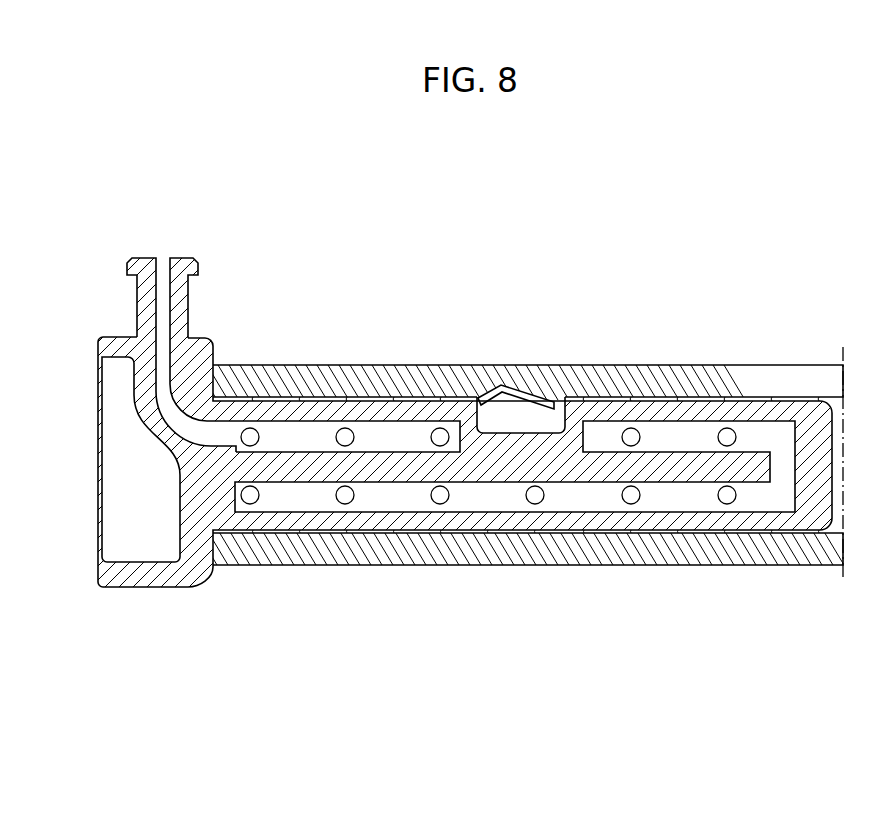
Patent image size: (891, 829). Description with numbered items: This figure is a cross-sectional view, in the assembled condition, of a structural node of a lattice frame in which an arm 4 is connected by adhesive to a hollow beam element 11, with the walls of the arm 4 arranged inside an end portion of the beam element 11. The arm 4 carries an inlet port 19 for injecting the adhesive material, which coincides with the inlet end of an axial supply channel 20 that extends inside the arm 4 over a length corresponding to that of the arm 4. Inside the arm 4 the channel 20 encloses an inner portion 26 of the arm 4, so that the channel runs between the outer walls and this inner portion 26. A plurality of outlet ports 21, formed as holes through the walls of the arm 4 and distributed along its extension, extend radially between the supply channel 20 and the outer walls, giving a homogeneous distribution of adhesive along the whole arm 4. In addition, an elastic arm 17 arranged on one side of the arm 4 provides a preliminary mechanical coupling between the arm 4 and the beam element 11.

The arm 4 is at (232, 330).
The inlet port 19 is at (132, 260).
The beam element 11 is at (687, 358).
The axial supply channel 20 is at (380, 435).
The inner portion 26 is at (380, 463).
The elastic arm 17 is at (517, 393).
The outlet ports 21 is at (641, 437).